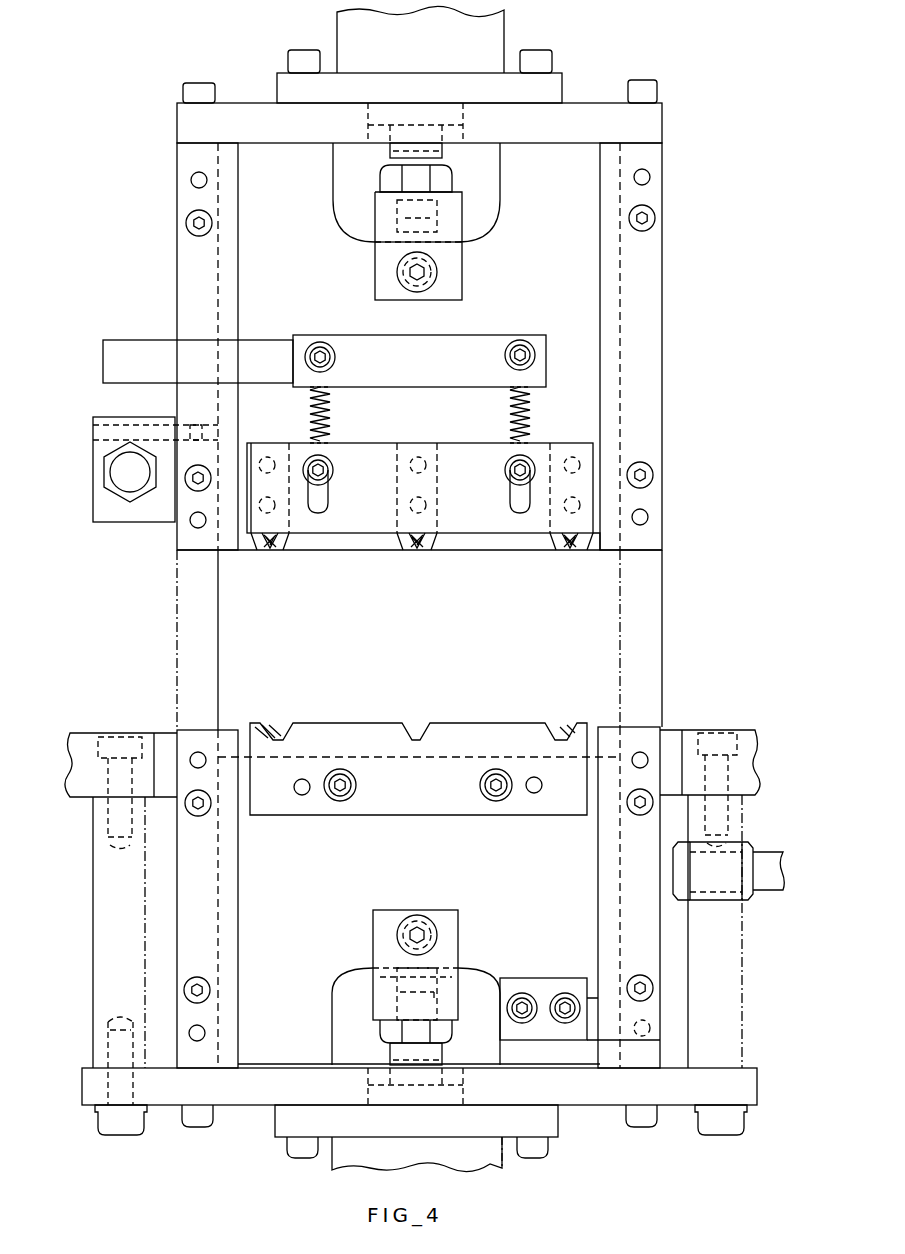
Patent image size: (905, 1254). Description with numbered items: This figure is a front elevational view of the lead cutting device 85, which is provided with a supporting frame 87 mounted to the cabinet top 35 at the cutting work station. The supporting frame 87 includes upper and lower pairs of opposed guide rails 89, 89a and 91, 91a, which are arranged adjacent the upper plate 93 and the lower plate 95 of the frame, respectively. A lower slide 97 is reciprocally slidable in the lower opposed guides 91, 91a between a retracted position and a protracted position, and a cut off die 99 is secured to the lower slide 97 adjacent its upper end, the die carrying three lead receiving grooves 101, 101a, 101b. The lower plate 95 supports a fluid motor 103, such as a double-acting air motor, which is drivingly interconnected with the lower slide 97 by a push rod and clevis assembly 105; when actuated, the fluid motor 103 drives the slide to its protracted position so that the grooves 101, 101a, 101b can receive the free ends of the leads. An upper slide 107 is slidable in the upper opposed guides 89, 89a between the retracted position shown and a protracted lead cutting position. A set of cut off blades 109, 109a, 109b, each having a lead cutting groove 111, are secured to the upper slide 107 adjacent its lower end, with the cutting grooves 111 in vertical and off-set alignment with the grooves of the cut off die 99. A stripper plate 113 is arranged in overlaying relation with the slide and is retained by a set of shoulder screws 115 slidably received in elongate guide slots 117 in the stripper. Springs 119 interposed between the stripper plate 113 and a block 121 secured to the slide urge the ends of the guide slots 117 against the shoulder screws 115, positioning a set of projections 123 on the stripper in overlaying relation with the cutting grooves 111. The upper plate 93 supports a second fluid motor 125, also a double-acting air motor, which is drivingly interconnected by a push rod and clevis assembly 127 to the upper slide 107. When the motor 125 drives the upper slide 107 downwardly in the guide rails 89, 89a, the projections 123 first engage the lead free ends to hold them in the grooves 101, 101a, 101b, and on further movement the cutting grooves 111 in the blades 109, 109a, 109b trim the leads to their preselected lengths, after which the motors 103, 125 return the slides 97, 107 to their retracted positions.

The cabinet top 35 is at (80, 768).
The lead cutting device 85 is at (722, 295).
The supporting frame 87 is at (662, 193).
The upper guide rail 89 is at (177, 240).
The upper guide rail 89a is at (662, 250).
The lower guide rail 91 is at (232, 932).
The lower guide rail 91a is at (600, 922).
The upper plate 93 is at (590, 110).
The lower plate 95 is at (587, 1090).
The lower slide 97 is at (450, 862).
The cut off die 99 is at (382, 805).
The lead receiving groove 101 is at (280, 731).
The lead receiving groove 101a is at (415, 733).
The lead receiving groove 101b is at (561, 733).
The fluid motor 103 is at (492, 1166).
The push rod and clevis assembly 105 is at (378, 948).
The upper slide 107 is at (495, 270).
The cut off blade 109 is at (263, 552).
The cut off blade 109a is at (406, 552).
The cut off blade 109b is at (583, 552).
The lead cutting groove 111 is at (266, 551).
The stripper plate 113 is at (380, 443).
The shoulder screw 115 is at (334, 470).
The elongate guide slot 117 is at (330, 500).
The spring 119 is at (308, 398).
The block 121 is at (324, 361).
The projection 123 is at (281, 548).
The fluid motor 125 is at (498, 30).
The push rod and clevis assembly 127 is at (373, 265).